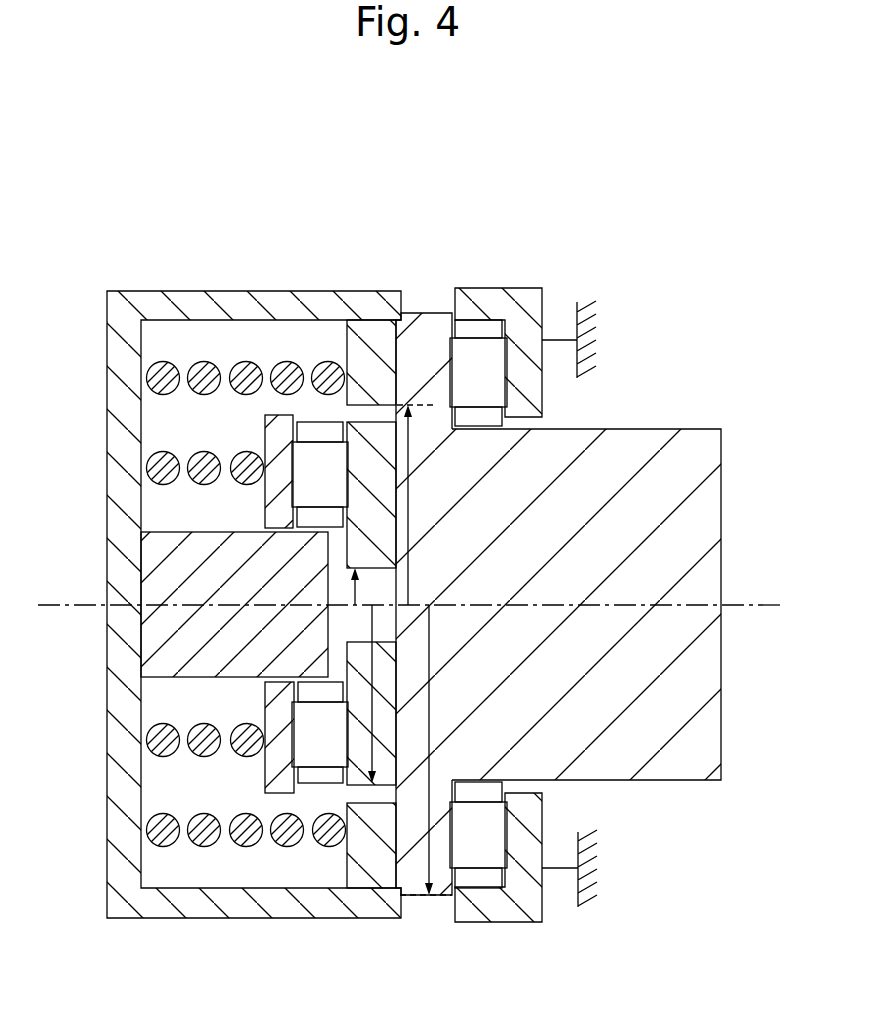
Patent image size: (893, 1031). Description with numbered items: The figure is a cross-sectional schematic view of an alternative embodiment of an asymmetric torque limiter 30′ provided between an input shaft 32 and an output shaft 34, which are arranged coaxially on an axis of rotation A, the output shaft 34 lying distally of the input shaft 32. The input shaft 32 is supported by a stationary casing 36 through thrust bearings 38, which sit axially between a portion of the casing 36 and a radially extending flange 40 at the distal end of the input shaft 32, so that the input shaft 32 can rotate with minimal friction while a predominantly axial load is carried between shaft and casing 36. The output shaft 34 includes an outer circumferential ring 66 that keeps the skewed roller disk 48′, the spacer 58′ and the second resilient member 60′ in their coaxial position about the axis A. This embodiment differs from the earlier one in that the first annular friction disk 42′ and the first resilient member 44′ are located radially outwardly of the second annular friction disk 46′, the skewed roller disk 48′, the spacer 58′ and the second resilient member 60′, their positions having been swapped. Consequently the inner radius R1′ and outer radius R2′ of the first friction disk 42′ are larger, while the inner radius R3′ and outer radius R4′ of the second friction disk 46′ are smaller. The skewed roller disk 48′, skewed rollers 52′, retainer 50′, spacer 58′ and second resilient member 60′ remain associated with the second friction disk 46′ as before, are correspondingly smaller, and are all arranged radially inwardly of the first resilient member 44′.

The asymmetric torque limiter 30′ is at (444, 183).
The input shaft 32 is at (655, 560).
The output shaft 34 is at (163, 567).
The stationary casing 36 is at (530, 300).
The thrust bearings 38 is at (483, 358).
The radially extending flange 40 is at (425, 335).
The first annular friction disk 42′ is at (370, 343).
The first resilient member 44′ is at (200, 367).
The second annular friction disk 46′ is at (365, 499).
The skewed roller disk 48′ is at (315, 400).
The retainer 50′ is at (313, 775).
The skewed rollers 52′ is at (313, 460).
The spacer 58′ is at (275, 430).
The second resilient member 60′ is at (160, 465).
The outer circumferential ring 66 is at (143, 302).
The inner radius of the first annular friction disk R1′ is at (422, 505).
The outer radius of the first annular friction disk R2′ is at (432, 750).
The inner radius of the second annular friction disk R3′ is at (372, 588).
The outer radius of the second annular friction disk R4′ is at (370, 627).
The axis of rotation A is at (411, 604).